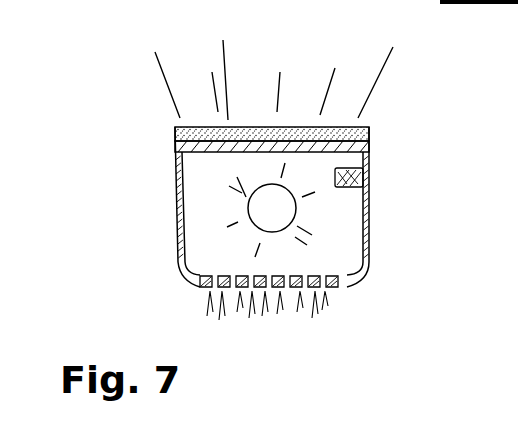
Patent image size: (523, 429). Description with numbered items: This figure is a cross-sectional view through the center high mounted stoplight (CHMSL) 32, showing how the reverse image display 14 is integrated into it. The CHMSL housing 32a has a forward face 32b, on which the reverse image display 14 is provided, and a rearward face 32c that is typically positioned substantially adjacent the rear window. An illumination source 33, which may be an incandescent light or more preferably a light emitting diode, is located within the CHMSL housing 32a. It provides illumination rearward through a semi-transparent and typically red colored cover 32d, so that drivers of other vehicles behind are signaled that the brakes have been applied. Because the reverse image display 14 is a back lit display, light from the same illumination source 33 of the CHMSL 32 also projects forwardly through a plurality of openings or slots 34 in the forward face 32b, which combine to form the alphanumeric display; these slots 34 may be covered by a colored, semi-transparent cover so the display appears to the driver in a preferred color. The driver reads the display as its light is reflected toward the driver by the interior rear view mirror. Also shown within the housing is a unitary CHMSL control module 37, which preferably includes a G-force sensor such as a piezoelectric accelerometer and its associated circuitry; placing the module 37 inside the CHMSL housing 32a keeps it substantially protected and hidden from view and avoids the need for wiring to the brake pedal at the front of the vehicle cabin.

The center high mounted stoplight 32 is at (152, 242).
The CHMSL housing 32a is at (178, 212).
The forward face 32b is at (198, 288).
The rearward face 32c is at (176, 137).
The cover 32d is at (331, 133).
The illumination source 33 is at (295, 222).
The openings or slots 34 is at (280, 308).
The CHMSL control module 37 is at (364, 178).
The reverse image display 14 is at (336, 289).